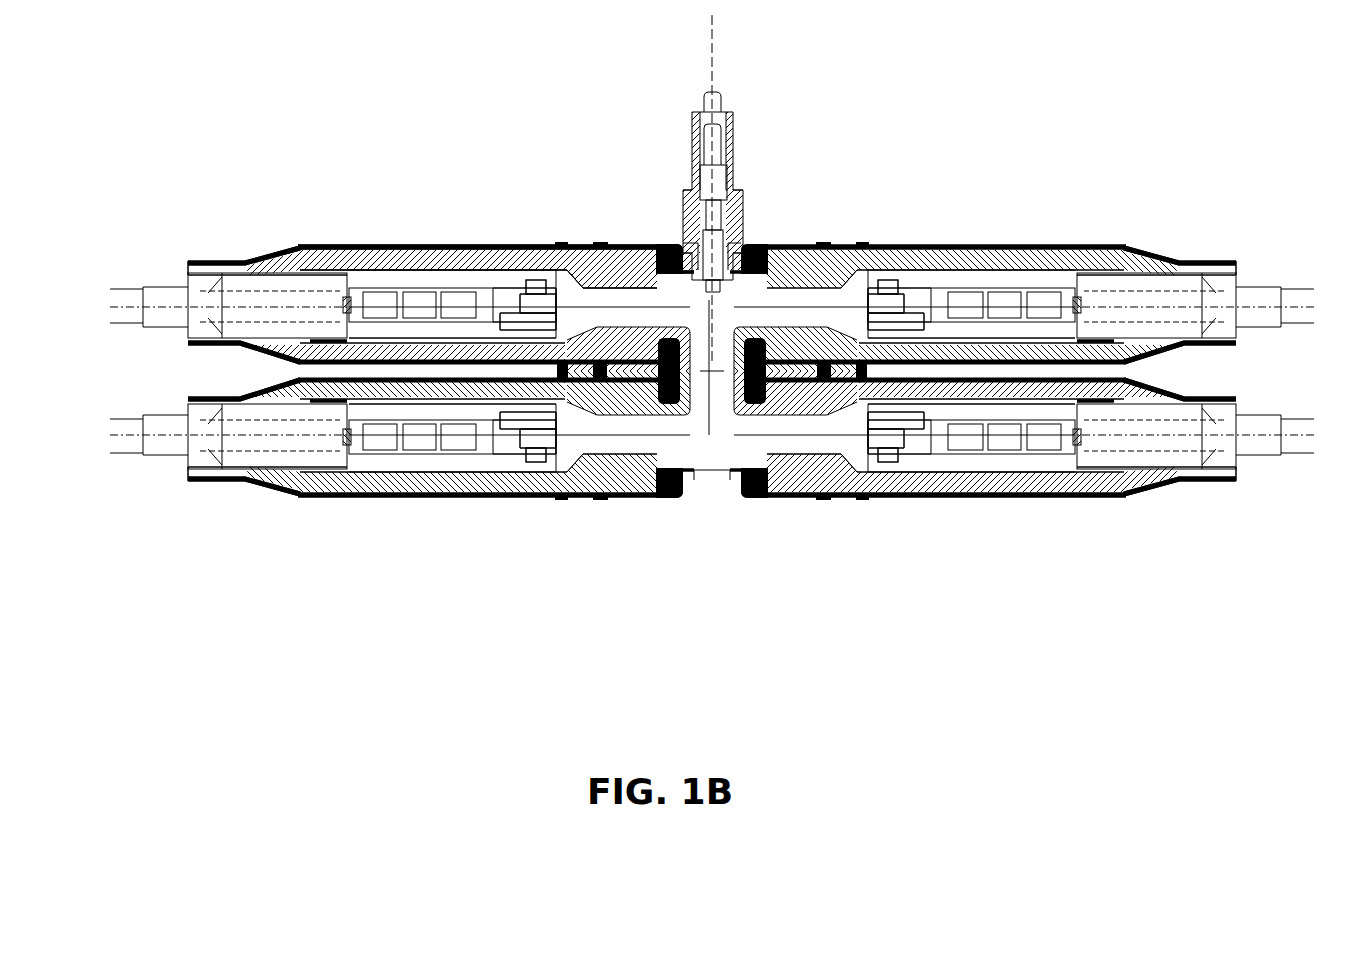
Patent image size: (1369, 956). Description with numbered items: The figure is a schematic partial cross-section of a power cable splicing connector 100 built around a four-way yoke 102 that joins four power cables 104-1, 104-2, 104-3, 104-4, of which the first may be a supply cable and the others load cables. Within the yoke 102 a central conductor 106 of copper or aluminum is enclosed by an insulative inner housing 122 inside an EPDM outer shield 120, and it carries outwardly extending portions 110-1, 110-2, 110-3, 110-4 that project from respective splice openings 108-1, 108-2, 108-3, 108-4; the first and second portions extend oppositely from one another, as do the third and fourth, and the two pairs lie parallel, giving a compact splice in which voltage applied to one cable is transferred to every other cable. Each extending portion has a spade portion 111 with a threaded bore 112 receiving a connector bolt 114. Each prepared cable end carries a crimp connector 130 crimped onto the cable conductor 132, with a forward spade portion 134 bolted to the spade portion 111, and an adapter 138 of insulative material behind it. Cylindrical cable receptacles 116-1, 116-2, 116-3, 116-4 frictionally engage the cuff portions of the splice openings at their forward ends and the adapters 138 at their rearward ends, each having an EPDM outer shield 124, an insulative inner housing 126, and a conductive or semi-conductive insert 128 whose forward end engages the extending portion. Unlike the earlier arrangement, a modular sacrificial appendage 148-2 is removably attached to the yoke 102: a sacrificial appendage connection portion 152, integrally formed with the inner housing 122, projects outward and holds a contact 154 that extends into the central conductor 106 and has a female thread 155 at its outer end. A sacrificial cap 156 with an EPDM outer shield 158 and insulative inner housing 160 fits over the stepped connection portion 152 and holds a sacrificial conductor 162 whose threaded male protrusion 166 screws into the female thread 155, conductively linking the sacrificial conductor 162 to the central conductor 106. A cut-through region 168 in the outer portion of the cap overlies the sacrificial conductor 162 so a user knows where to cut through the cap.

The power cable splicing connector 100 is at (732, 371).
The four-way yoke 102 is at (773, 290).
The power cable 104-1 is at (133, 308).
The power cable 104-2 is at (1297, 310).
The power cable 104-3 is at (140, 453).
The power cable 104-4 is at (1305, 447).
The central conductor 106 is at (703, 489).
The splice opening 108-1 is at (607, 305).
The splice opening 108-2 is at (795, 292).
The splice opening 108-3 is at (645, 474).
The splice opening 108-4 is at (783, 480).
The outwardly extending portion 110-1 is at (635, 285).
The outwardly extending portion 110-2 is at (803, 283).
The outwardly extending portion 110-3 is at (597, 457).
The outwardly extending portion 110-4 is at (848, 467).
The spade portion 111 is at (540, 300).
The threaded bore 112 is at (517, 323).
The connector bolt 114 is at (562, 330).
The cable receptacle 116-1 is at (380, 235).
The cable receptacle 116-2 is at (1082, 232).
The cable receptacle 116-3 is at (388, 510).
The cable receptacle 116-4 is at (1035, 515).
The outer shield 120 is at (690, 447).
The insulative inner housing 122 is at (662, 312).
The outer shield 124 is at (1122, 262).
The insulative inner housing 126 is at (397, 257).
The insert 128 is at (452, 276).
The crimp connector 130 is at (456, 316).
The cable conductor 132 is at (347, 302).
The forward spade portion 134 is at (520, 343).
The adapter 138 is at (275, 287).
The sacrificial appendage 148-2 is at (716, 178).
The sacrificial appendage connection portion 152 is at (698, 243).
The contact 154 is at (716, 298).
The female thread 155 is at (712, 243).
The sacrificial cap 156 is at (685, 104).
The outer shield 158 is at (730, 168).
The insulative inner housing 160 is at (700, 175).
The sacrificial conductor 162 is at (706, 150).
The threaded male protrusion 166 is at (718, 215).
The cut-through region 168 is at (738, 169).